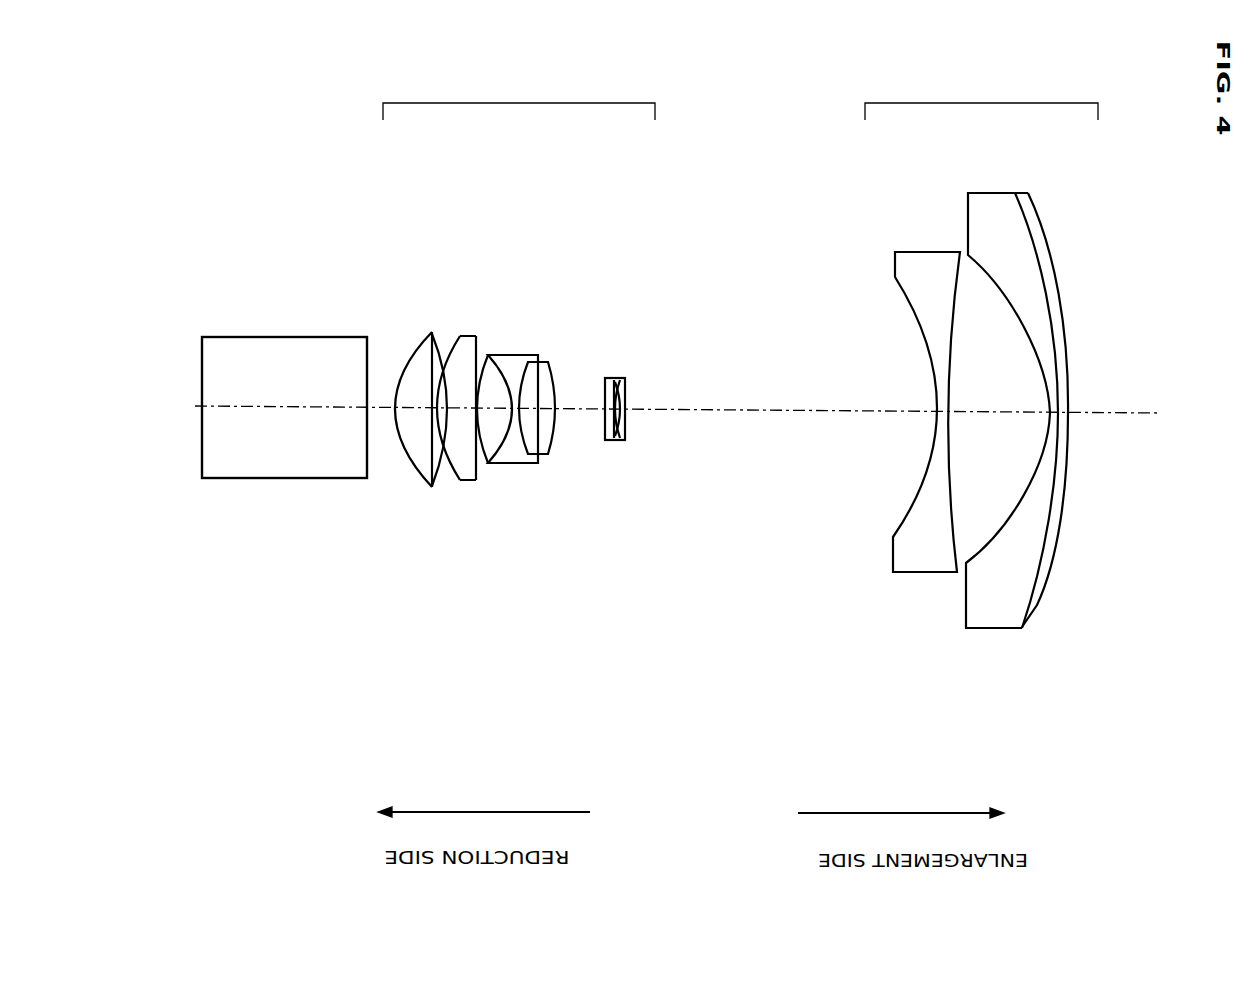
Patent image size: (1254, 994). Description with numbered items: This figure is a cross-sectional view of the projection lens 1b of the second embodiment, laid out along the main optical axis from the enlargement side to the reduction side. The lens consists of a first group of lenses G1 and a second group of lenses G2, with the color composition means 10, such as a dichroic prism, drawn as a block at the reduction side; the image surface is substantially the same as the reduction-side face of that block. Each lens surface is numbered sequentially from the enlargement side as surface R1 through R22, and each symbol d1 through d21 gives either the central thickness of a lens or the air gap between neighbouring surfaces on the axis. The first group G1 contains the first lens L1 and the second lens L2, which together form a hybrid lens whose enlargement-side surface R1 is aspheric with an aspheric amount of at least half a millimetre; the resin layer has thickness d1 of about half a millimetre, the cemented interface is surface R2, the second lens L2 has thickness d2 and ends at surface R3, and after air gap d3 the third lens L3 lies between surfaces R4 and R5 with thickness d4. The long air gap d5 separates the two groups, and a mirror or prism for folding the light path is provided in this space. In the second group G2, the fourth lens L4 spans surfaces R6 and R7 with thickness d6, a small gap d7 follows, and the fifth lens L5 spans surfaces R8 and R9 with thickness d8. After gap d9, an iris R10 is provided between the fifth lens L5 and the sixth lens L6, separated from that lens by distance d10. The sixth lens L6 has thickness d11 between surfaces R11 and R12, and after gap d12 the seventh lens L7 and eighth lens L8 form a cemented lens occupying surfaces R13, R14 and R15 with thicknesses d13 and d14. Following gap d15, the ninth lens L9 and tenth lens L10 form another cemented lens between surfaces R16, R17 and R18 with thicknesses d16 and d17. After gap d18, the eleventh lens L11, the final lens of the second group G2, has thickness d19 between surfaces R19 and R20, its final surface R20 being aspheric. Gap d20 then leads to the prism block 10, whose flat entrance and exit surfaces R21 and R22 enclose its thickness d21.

The projection lens 1b is at (386, 696).
The color composition means 10 is at (225, 338).
The first group of lenses G1 is at (981, 97).
The second group of lenses G2 is at (519, 97).
The first lens L1 is at (1040, 228).
The second lens L2 is at (993, 203).
The third lens L3 is at (897, 268).
The fourth lens L4 is at (624, 378).
The fifth lens L5 is at (612, 378).
The sixth lens L6 is at (555, 360).
The seventh lens L7 is at (510, 350).
The eighth lens L8 is at (480, 338).
The ninth lens L9 is at (462, 334).
The tenth lens L10 is at (456, 334).
The eleventh lens L11 is at (424, 345).
The first lens surface R1 is at (1045, 603).
The second lens surface R2 is at (1017, 612).
The third lens surface R3 is at (1000, 535).
The fourth lens surface R4 is at (952, 527).
The fifth lens surface R5 is at (905, 522).
The sixth lens surface R6 is at (628, 442).
The seventh lens surface R7 is at (618, 442).
The eighth lens surface R8 is at (613, 442).
The ninth lens surface R9 is at (608, 442).
The iris R10 is at (556, 447).
The eleventh lens surface R11 is at (540, 452).
The twelfth lens surface R12 is at (538, 465).
The thirteenth lens surface R13 is at (500, 462).
The fourteenth lens surface R14 is at (483, 465).
The fifteenth lens surface R15 is at (488, 466).
The sixteenth lens surface R16 is at (452, 468).
The seventeenth lens surface R17 is at (438, 455).
The eighteenth lens surface R18 is at (420, 462).
The nineteenth lens surface R19 is at (409, 465).
The twentieth lens surface R20 is at (401, 470).
The prism entrance surface R21 is at (366, 480).
The prism exit surface R22 is at (202, 470).
The central thickness of first lens d1 is at (1070, 408).
The central thickness of second lens d2 is at (1058, 375).
The air gap between second and third lenses d3 is at (997, 426).
The central thickness of third lens d4 is at (938, 410).
The air gap between first and second lens groups d5 is at (781, 424).
The central thickness of fourth lens d6 is at (626, 398).
The air gap between fourth and fifth lenses d7 is at (626, 380).
The central thickness of fifth lens d8 is at (625, 382).
The air gap between fifth lens and iris d9 is at (590, 388).
The air gap between iris and sixth lens d10 is at (548, 418).
The central thickness of sixth lens d11 is at (545, 386).
The air gap between sixth and seventh lenses d12 is at (520, 375).
The central thickness of seventh lens d13 is at (525, 355).
The central thickness of eighth lens d14 is at (484, 350).
The air gap between eighth and ninth lenses d15 is at (470, 368).
The central thickness of ninth lens d16 is at (478, 345).
The central thickness of tenth lens d17 is at (437, 368).
The air gap between tenth and eleventh lenses d18 is at (433, 348).
The central thickness of eleventh lens d19 is at (432, 422).
The air gap between eleventh lens and prism d20 is at (372, 388).
The central thickness of prism d21 is at (284, 419).